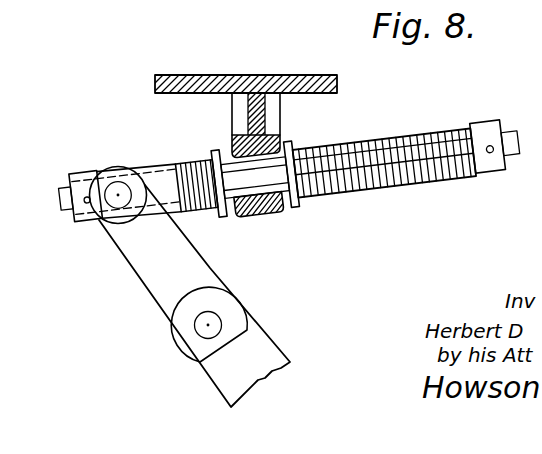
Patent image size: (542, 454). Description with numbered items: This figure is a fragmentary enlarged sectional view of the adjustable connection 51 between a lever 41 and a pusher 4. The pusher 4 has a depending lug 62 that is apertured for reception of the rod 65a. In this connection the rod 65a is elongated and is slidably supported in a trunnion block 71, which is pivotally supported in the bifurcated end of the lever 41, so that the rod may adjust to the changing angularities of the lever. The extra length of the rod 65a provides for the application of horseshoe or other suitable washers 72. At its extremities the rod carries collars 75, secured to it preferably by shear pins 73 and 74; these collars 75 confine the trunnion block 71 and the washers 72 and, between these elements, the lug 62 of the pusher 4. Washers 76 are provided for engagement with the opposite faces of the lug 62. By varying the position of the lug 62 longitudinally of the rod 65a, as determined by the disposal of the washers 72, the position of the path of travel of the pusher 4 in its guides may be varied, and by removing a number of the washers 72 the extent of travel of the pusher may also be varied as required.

The pusher 4 is at (178, 94).
The lever 41 is at (192, 268).
The adjustable connection 51 is at (327, 186).
The depending lug 62 is at (283, 133).
The rod 65a is at (259, 215).
The trunnion block 71 is at (124, 175).
The horseshoe washers 72 is at (382, 143).
The shear pin 73 is at (75, 175).
The shear pin 74 is at (505, 123).
The collars 75 is at (289, 190).
The washers 76 is at (251, 194).